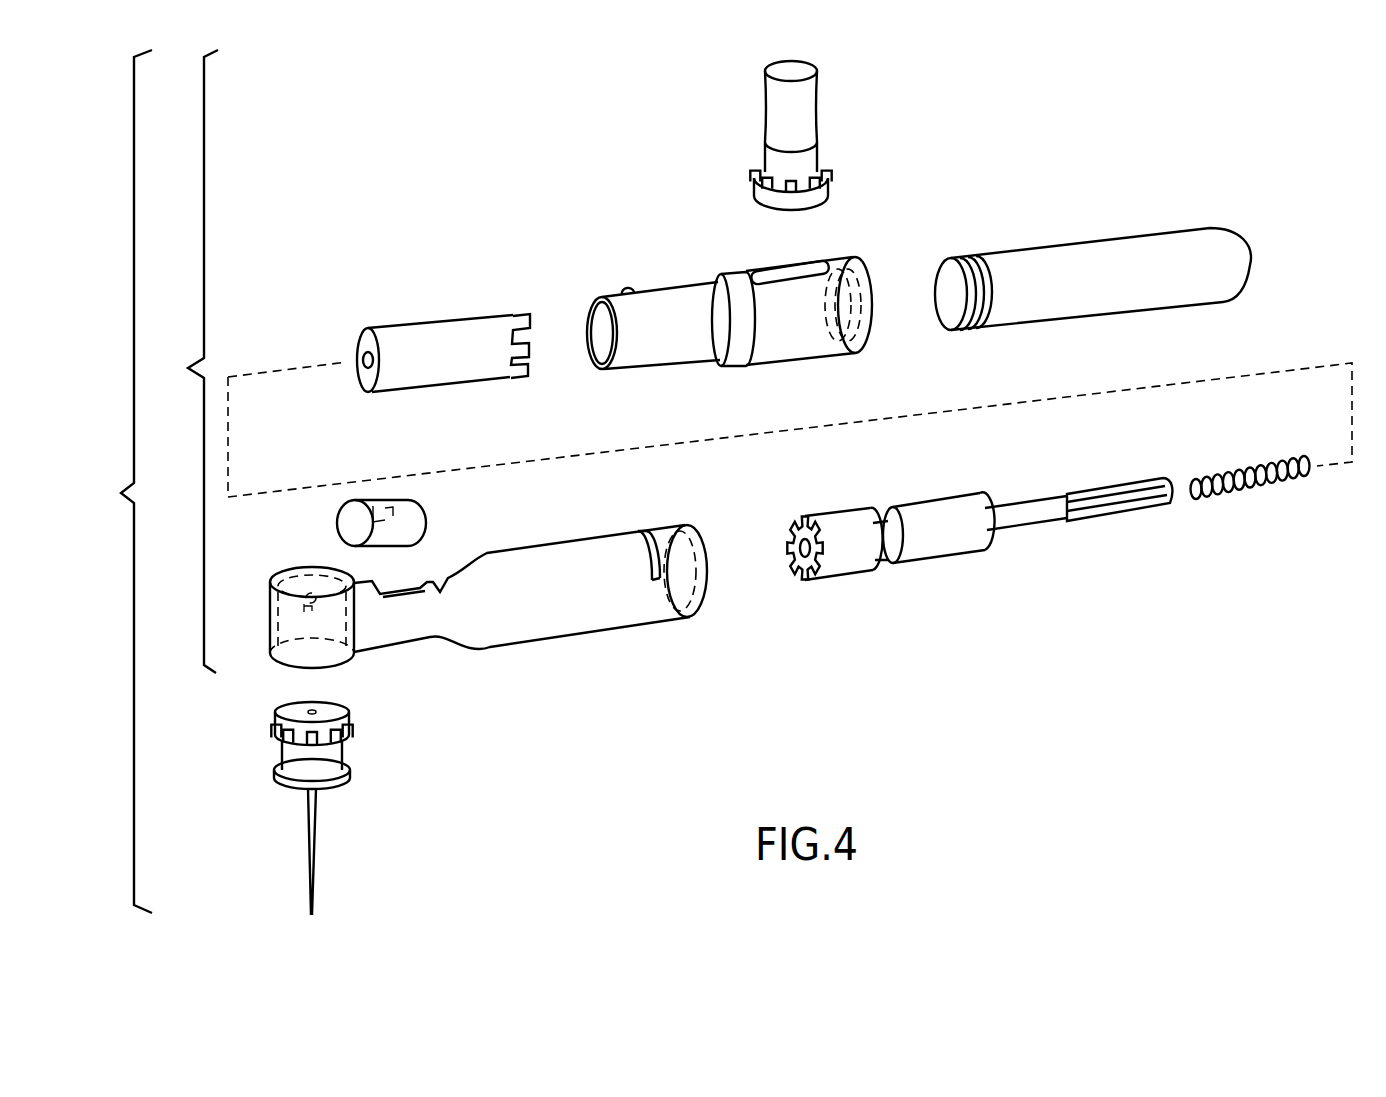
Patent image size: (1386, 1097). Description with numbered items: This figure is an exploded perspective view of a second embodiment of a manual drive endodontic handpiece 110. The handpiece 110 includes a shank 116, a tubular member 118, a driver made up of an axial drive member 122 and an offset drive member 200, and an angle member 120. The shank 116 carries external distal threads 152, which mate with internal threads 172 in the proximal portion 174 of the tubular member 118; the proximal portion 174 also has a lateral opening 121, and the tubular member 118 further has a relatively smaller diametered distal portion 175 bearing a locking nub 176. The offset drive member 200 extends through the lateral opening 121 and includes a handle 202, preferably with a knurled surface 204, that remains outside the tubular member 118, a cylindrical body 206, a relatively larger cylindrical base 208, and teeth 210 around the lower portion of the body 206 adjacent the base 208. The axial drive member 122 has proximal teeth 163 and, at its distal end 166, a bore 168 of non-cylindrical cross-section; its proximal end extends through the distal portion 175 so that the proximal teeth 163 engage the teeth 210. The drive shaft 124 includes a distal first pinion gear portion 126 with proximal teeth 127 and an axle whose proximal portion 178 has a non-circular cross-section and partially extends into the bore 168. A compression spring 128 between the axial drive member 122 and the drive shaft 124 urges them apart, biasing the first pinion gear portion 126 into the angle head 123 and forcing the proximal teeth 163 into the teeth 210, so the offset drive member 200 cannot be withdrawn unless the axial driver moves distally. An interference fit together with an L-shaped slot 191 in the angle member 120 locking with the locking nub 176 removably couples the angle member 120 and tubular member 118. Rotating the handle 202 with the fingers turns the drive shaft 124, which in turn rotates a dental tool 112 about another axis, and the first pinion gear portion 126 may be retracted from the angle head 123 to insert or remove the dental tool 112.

The endodontic handpiece 110 is at (736, 481).
The dental tool 112 is at (366, 745).
The shank 116 is at (1093, 266).
The tubular member 118 is at (656, 329).
The angle member 120 is at (472, 583).
The lateral opening 121 is at (783, 273).
The axial drive member 122 is at (429, 331).
The angle head 123 is at (272, 577).
The drive shaft 124 is at (971, 510).
The first pinion gear portion 126 is at (829, 523).
The proximal teeth 127 is at (798, 523).
The compression spring 128 is at (1247, 487).
The external distal threads 152 is at (958, 258).
The proximal teeth 163 is at (512, 317).
The distal end 166 is at (375, 332).
The bore 168 is at (360, 357).
The internal threads 172 is at (863, 277).
The proximal portion 174 is at (820, 320).
The distal portion 175 is at (620, 310).
The locking nub 176 is at (635, 285).
The proximal portion 178 is at (1133, 490).
The L-shaped slot 191 is at (642, 535).
The offset drive member 200 is at (797, 137).
The handle 202 is at (768, 88).
The knurled surface 204 is at (790, 111).
The cylindrical body 206 is at (775, 162).
The cylindrical base 208 is at (807, 203).
The teeth 210 is at (823, 179).